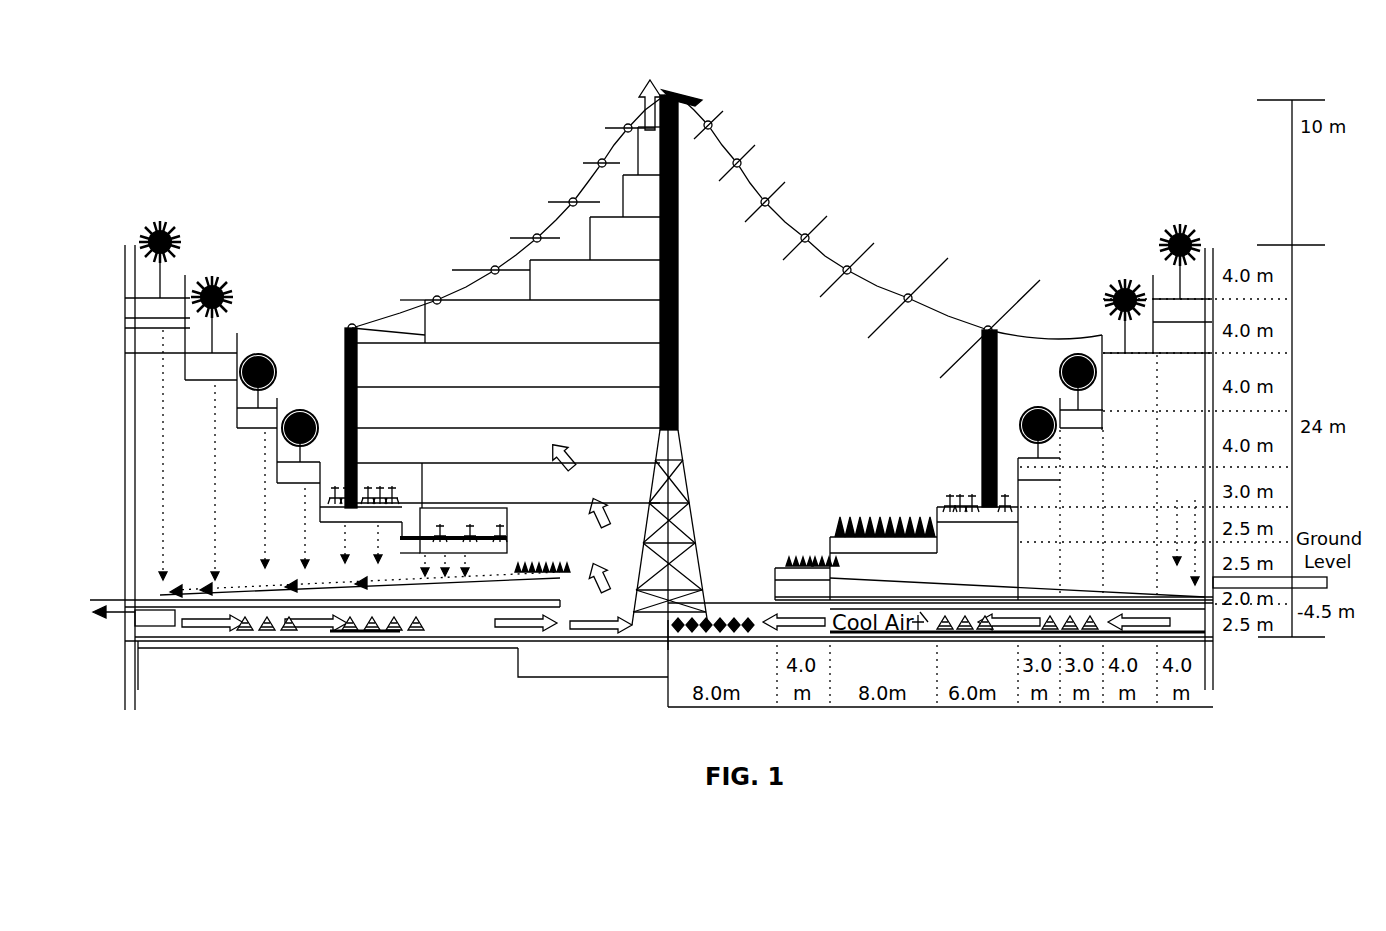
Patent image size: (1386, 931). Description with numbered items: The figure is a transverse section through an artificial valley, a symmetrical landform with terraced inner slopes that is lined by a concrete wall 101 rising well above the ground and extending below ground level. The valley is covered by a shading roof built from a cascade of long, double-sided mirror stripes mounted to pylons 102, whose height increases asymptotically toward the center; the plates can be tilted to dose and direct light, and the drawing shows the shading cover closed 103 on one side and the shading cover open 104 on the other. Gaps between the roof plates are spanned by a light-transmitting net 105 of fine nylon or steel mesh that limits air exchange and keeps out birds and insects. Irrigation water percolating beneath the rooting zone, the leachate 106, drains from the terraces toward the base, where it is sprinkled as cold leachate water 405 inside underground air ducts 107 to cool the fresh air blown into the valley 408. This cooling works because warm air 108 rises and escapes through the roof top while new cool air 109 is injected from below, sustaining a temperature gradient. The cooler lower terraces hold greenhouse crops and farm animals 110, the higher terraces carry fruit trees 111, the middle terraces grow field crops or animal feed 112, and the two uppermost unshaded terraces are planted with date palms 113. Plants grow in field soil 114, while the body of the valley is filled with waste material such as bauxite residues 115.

The concrete wall 101 is at (165, 228).
The pylons 102 is at (622, 127).
The shading cover closed 103 is at (550, 200).
The shading cover open 104 is at (870, 245).
The light-transmitting net 105 is at (592, 188).
The leachate 106 is at (359, 463).
The underground air ducts 107 is at (379, 645).
The warm air 108 is at (667, 86).
The cool air 109 is at (553, 440).
The greenhouse crops and farm animals 110 is at (418, 510).
The fruit trees 111 is at (994, 469).
The field crops or animal feed 112 is at (962, 492).
The date palms 113 is at (1113, 280).
The field soil 114 is at (862, 516).
The bauxite residues 115 is at (200, 400).
The cold leachate water 405 is at (372, 640).
The fresh air blown into the valley 408 is at (108, 622).